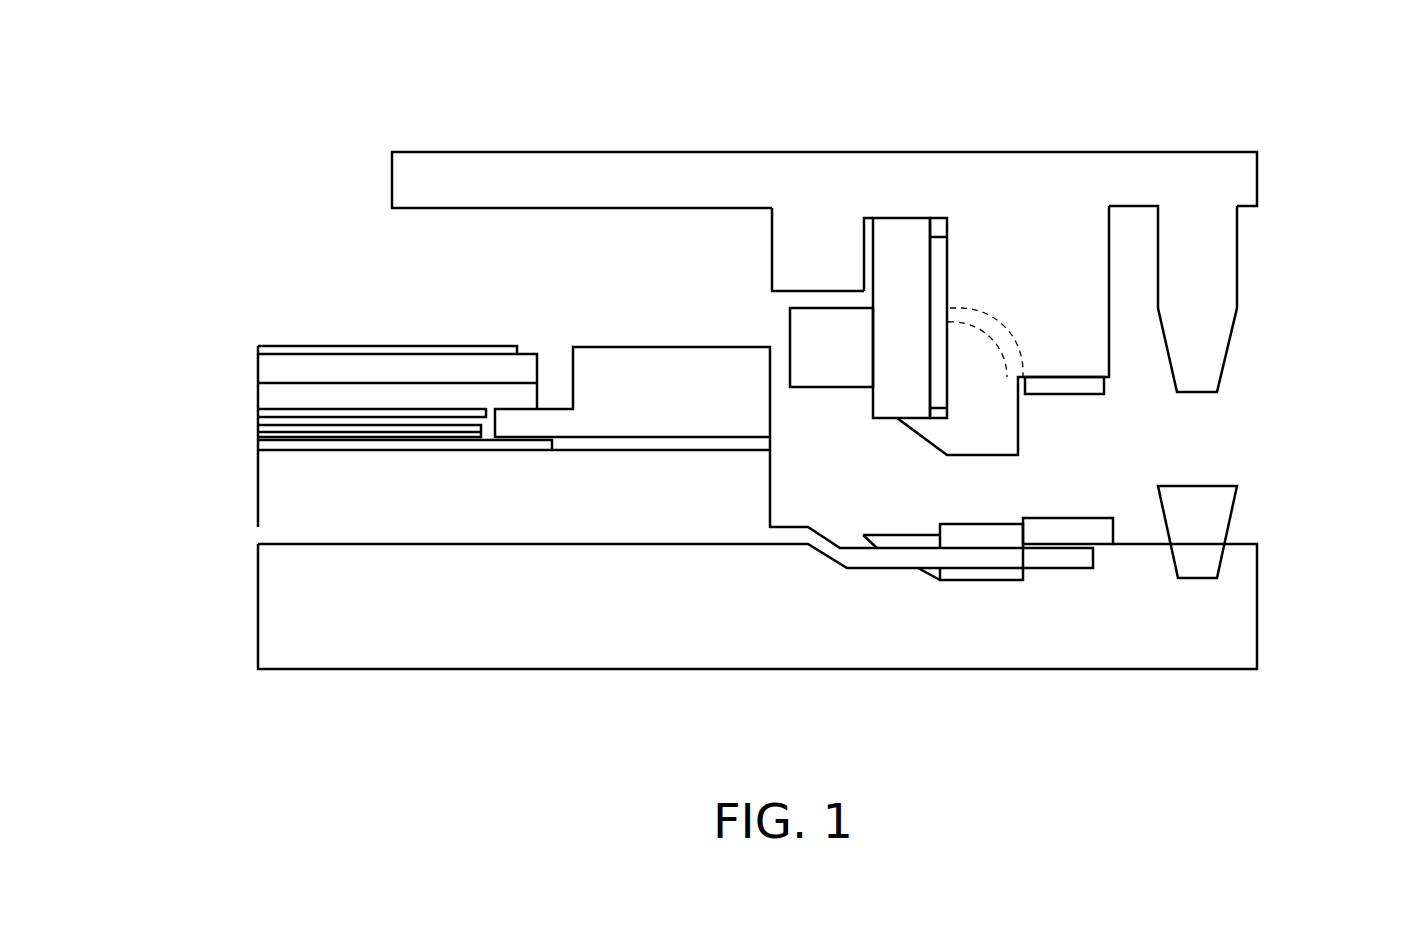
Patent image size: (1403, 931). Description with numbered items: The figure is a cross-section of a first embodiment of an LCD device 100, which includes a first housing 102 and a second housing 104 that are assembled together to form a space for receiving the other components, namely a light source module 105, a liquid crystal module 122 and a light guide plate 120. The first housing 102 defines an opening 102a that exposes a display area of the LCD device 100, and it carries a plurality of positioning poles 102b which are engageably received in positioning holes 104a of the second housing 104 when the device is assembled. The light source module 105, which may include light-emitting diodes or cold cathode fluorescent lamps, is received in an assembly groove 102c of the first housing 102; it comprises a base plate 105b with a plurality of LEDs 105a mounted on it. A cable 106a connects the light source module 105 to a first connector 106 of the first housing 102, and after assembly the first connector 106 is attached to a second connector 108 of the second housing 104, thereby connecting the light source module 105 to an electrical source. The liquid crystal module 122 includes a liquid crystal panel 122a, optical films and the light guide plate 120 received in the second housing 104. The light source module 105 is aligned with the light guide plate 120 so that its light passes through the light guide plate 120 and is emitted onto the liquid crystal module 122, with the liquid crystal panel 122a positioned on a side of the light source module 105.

The LCD device 100 is at (1148, 94).
The first housing 102 is at (840, 263).
The opening 102a is at (365, 183).
The positioning poles 102b is at (1232, 258).
The assembly groove 102c is at (865, 217).
The second housing 104 is at (931, 658).
The positioning holes 104a is at (1223, 503).
The light source module 105 is at (868, 369).
The LEDs 105a is at (828, 370).
The base plate 105b is at (888, 408).
The first connector 106 is at (1095, 387).
The cable 106a is at (985, 373).
The second connector 108 is at (1055, 525).
The light guide plate 120 is at (540, 505).
The liquid crystal module 122 is at (453, 359).
The liquid crystal panel 122a is at (343, 375).